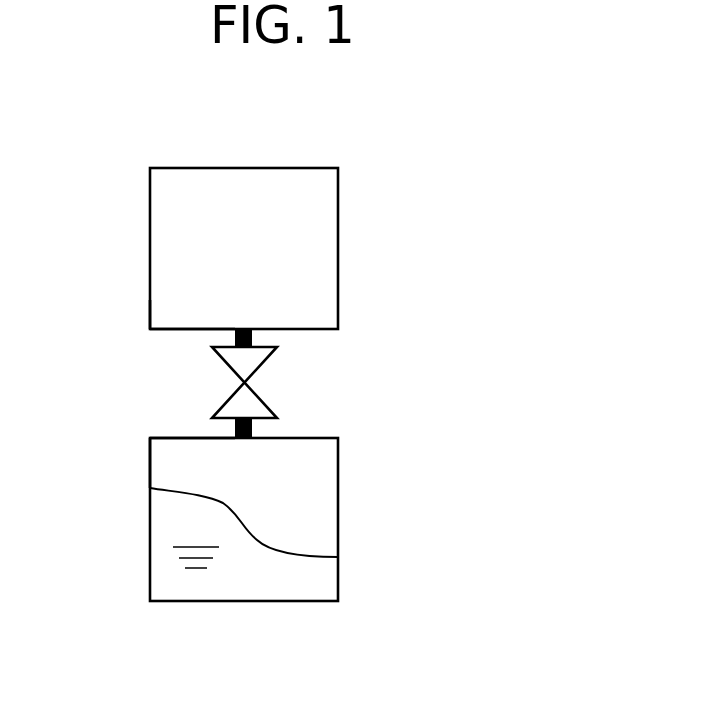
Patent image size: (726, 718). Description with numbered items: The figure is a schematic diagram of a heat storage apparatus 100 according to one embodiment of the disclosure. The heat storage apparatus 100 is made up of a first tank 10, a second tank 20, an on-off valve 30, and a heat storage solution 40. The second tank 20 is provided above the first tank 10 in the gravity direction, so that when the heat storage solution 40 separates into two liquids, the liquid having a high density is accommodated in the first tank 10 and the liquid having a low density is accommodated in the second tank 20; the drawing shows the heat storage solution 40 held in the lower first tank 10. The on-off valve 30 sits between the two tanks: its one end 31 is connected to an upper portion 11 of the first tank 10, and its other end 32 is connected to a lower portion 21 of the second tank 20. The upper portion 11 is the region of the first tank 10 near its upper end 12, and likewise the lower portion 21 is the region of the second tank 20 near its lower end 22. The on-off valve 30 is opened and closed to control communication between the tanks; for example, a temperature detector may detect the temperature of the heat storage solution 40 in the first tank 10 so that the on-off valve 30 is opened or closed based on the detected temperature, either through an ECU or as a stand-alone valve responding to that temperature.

The heat storage apparatus 100 is at (436, 161).
The second tank 20 is at (312, 238).
The lower portion 21 is at (178, 310).
The lower end 22 is at (168, 330).
The another end 32 is at (252, 336).
The on-off valve 30 is at (253, 363).
The one end 31 is at (252, 432).
The first tank 10 is at (312, 510).
The upper end 12 is at (173, 438).
The upper portion 11 is at (185, 468).
The heat storage solution 40 is at (312, 582).